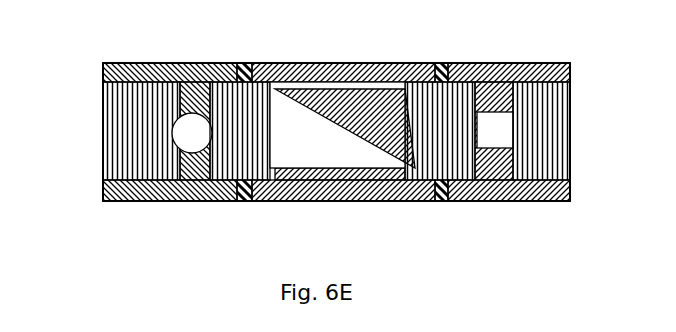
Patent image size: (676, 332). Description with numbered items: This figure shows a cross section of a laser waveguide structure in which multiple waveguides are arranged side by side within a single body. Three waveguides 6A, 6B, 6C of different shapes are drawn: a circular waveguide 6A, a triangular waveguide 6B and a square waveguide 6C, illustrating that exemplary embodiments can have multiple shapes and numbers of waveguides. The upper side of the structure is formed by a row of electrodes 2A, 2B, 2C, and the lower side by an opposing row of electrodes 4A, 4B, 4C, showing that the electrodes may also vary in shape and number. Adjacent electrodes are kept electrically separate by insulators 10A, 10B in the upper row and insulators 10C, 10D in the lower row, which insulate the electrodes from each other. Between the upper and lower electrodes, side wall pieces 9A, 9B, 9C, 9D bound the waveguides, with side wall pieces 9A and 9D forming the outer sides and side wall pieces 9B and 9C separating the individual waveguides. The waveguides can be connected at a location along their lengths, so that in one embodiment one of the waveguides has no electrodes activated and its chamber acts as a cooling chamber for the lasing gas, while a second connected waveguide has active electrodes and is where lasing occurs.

The electrode 2A is at (102, 70).
The electrode 2B is at (305, 63).
The electrode 2C is at (497, 62).
The electrode 4A is at (102, 185).
The electrode 4B is at (355, 200).
The electrode 4C is at (570, 192).
The waveguide 6A is at (190, 128).
The waveguide 6B is at (303, 138).
The waveguide 6C is at (493, 128).
The side wall piece 9A is at (132, 147).
The side wall piece 9B is at (230, 147).
The side wall piece 9C is at (450, 166).
The side wall piece 9D is at (537, 140).
The insulator 10A is at (241, 66).
The insulator 10B is at (442, 65).
The insulator 10C is at (243, 196).
The insulator 10D is at (440, 201).